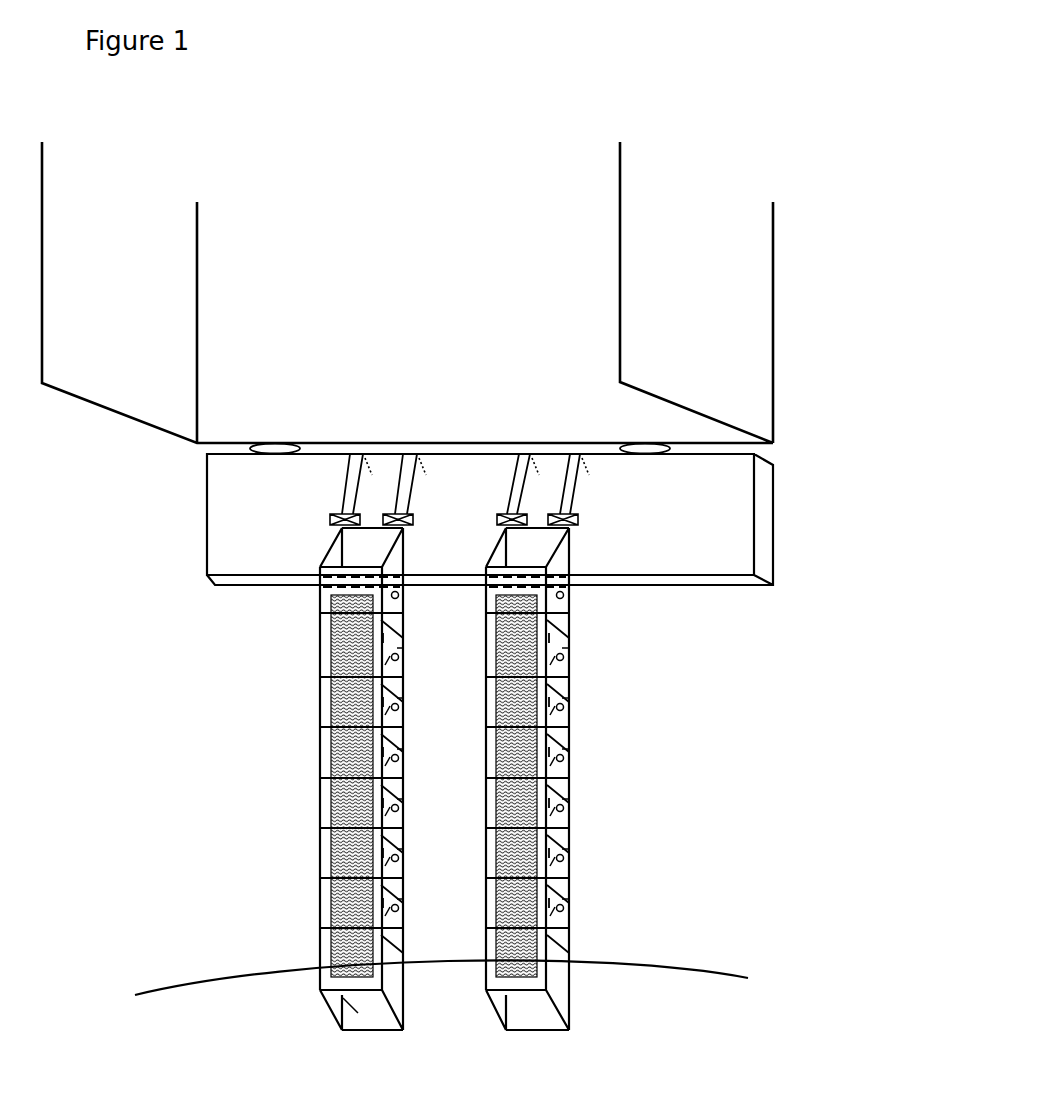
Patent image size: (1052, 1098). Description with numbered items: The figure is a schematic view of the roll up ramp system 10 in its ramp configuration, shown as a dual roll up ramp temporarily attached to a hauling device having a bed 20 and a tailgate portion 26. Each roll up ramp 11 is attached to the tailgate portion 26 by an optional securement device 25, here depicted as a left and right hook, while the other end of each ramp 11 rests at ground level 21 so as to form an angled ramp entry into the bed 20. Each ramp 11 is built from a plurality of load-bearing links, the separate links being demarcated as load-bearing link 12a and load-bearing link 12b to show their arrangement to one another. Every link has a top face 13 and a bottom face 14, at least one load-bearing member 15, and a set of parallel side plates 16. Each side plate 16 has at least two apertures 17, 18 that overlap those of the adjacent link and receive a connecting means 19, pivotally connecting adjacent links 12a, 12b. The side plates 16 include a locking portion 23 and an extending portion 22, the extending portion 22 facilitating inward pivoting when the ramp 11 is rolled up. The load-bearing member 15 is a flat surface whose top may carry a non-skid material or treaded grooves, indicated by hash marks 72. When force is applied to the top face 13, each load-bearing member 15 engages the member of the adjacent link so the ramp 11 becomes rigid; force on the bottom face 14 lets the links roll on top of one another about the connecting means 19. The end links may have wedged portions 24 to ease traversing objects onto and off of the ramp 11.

The roll up ramp system 10 is at (255, 55).
The bed 20 is at (763, 288).
The tailgate portion 26 is at (773, 545).
The securement device 25 is at (342, 492).
The wedged portions 24 is at (548, 545).
The roll up ramp 11 is at (310, 759).
The load-bearing link 12a is at (318, 873).
The load-bearing link 12b is at (482, 598).
The set of parallel side plates 16 is at (392, 823).
The aperture 17 is at (563, 757).
The aperture 18 is at (569, 808).
The extending portion 22 is at (569, 845).
The locking portion 23 is at (569, 930).
The top face 13 is at (320, 590).
The bottom face 14 is at (320, 632).
The connecting means 19 is at (312, 703).
The load-bearing member 15 is at (330, 890).
The hash marks 72 is at (327, 942).
The ground level 21 is at (692, 980).